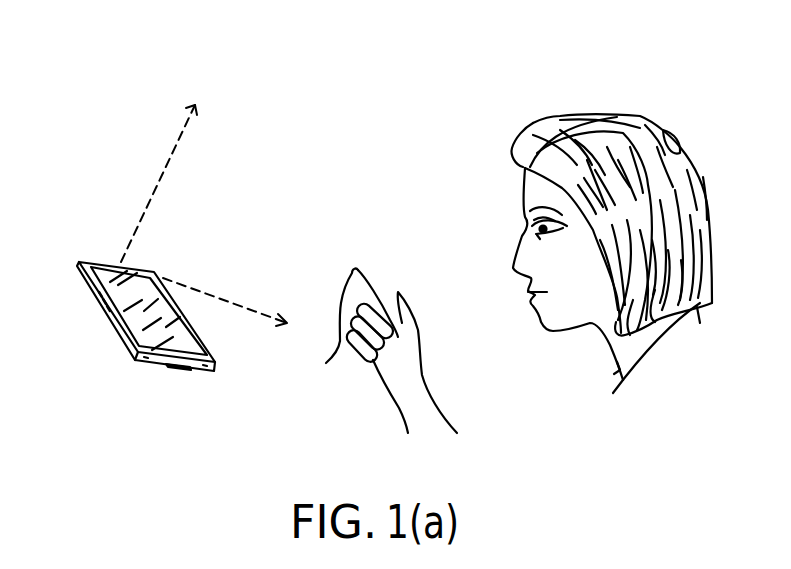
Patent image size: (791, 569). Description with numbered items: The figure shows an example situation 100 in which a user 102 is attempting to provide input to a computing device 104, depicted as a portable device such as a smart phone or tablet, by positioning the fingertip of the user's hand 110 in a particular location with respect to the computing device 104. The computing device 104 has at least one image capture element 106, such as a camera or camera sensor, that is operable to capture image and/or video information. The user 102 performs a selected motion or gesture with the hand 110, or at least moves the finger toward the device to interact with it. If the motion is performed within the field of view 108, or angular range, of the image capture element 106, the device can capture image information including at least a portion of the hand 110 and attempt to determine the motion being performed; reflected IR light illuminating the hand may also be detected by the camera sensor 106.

The situation 100 is at (702, 115).
The user 102 is at (475, 170).
The computing device 104 is at (203, 375).
The image capture element 106 is at (120, 262).
The field of view 108 is at (180, 140).
The hand 110 is at (380, 351).